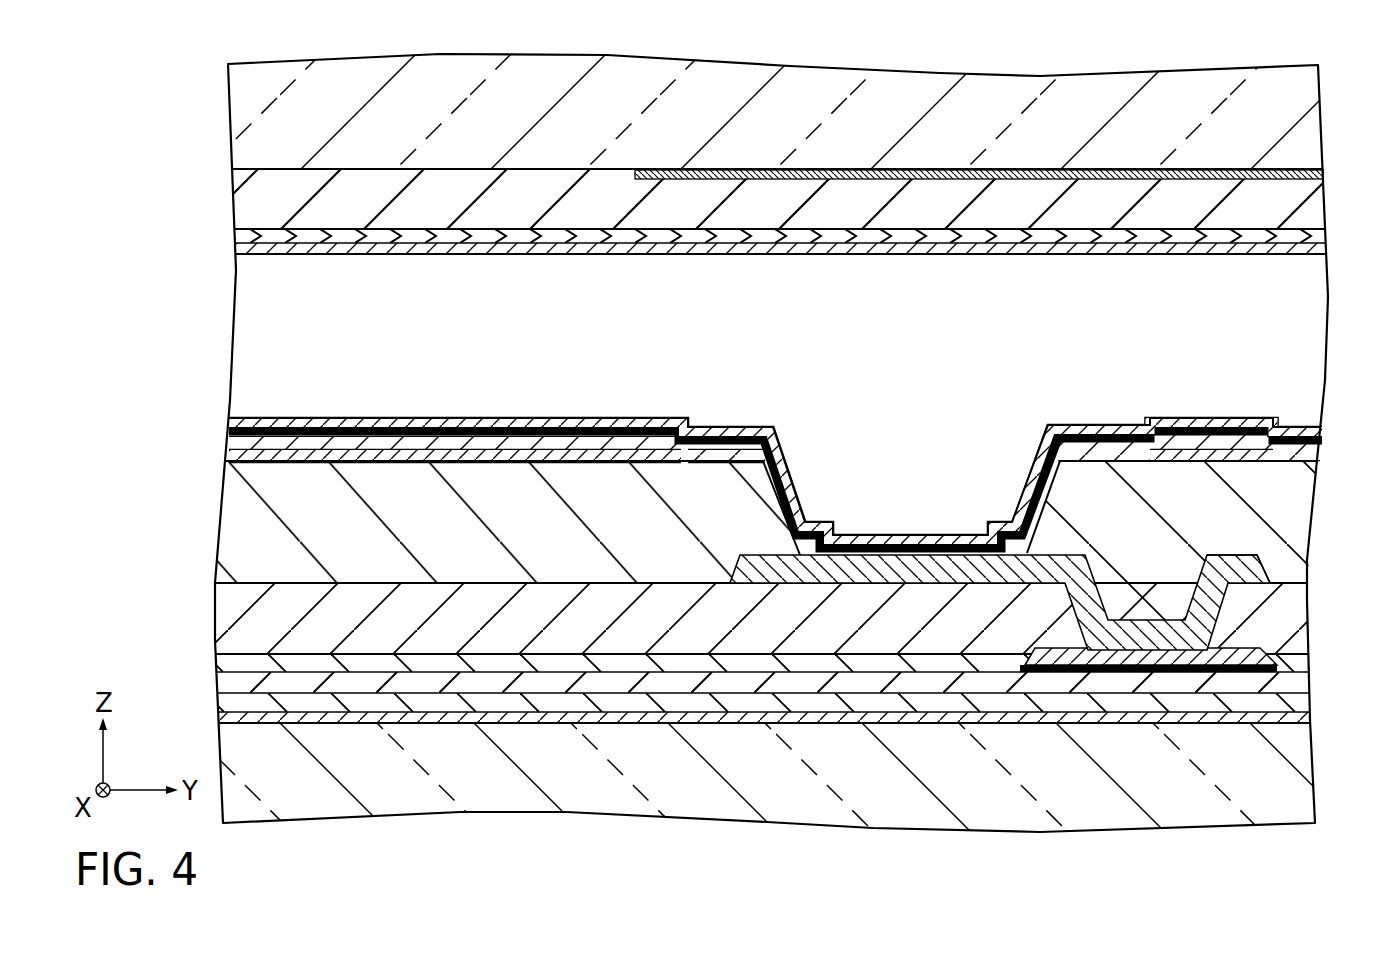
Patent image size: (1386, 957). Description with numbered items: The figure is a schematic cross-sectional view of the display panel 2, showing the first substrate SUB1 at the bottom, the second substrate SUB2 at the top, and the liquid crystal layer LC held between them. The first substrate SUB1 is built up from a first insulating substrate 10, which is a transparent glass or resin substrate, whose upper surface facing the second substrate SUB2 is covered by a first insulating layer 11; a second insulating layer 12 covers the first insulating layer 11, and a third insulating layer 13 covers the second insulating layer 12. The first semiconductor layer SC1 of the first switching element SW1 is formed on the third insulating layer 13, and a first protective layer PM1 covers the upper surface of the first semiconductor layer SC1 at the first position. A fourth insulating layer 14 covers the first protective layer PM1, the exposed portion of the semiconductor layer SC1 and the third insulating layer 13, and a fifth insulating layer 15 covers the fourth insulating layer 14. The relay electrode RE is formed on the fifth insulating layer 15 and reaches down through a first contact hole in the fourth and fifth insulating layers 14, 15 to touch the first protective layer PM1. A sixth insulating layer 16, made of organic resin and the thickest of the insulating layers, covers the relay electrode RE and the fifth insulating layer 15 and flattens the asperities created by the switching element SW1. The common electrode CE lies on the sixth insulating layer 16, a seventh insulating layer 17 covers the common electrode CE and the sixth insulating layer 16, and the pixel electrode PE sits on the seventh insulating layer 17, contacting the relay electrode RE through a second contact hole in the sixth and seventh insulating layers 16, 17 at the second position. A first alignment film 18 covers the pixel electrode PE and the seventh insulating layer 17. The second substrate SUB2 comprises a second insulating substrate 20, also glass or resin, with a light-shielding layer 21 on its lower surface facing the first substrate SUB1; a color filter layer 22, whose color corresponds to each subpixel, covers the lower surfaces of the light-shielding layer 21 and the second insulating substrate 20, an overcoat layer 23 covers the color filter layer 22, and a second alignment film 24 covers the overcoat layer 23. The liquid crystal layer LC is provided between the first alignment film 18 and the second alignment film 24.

The display panel 2 is at (745, 432).
The first insulating substrate 10 is at (1297, 755).
The first insulating layer 11 is at (1297, 717).
The second insulating layer 12 is at (1297, 700).
The third insulating layer 13 is at (1297, 682).
The fourth insulating layer 14 is at (1297, 657).
The fifth insulating layer 15 is at (1298, 606).
The sixth insulating layer 16 is at (1288, 522).
The seventh insulating layer 17 is at (1312, 443).
The first alignment film 18 is at (1303, 428).
The second insulating substrate 20 is at (1300, 113).
The light-shielding layer 21 is at (1020, 172).
The color filter layer 22 is at (1308, 203).
The overcoat layer 23 is at (1318, 240).
The second alignment film 24 is at (1300, 258).
The first substrate SUB1 is at (761, 597).
The second substrate SUB2 is at (762, 182).
The liquid crystal layer LC is at (248, 337).
The pixel electrode PE is at (613, 420).
The common electrode CE is at (519, 460).
The relay electrode RE is at (1000, 571).
The first semiconductor layer SC1 is at (1083, 663).
The first protective layer PM1 is at (1150, 658).
The first switching element SW1 is at (1156, 727).